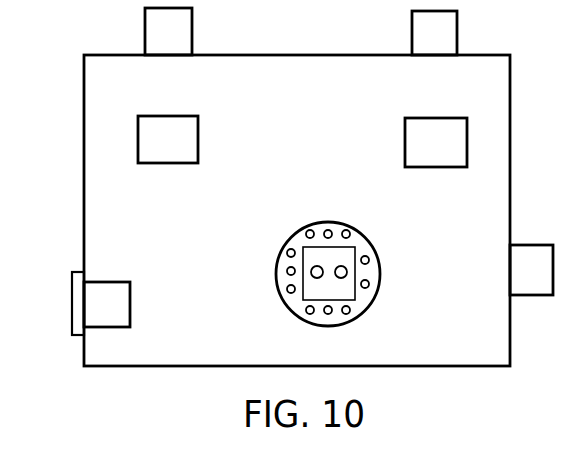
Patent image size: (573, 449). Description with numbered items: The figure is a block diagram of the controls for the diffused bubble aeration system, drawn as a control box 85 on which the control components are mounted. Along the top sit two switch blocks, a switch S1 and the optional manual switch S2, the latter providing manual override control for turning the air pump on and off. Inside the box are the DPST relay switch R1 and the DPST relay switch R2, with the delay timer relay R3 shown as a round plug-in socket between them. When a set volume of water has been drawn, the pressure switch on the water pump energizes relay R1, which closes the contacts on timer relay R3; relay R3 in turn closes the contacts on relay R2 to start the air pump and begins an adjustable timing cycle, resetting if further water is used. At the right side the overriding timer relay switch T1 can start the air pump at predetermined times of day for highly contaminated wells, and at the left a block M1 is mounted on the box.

The control box 85 is at (84, 164).
The switch S1 is at (168, 31).
The manual switch S2 is at (434, 33).
The DPST relay switch R1 is at (168, 139).
The DPST relay switch R2 is at (436, 142).
The delay timer relay R3 is at (372, 243).
The meter M1 is at (101, 303).
The overriding timer relay switch T1 is at (531, 270).